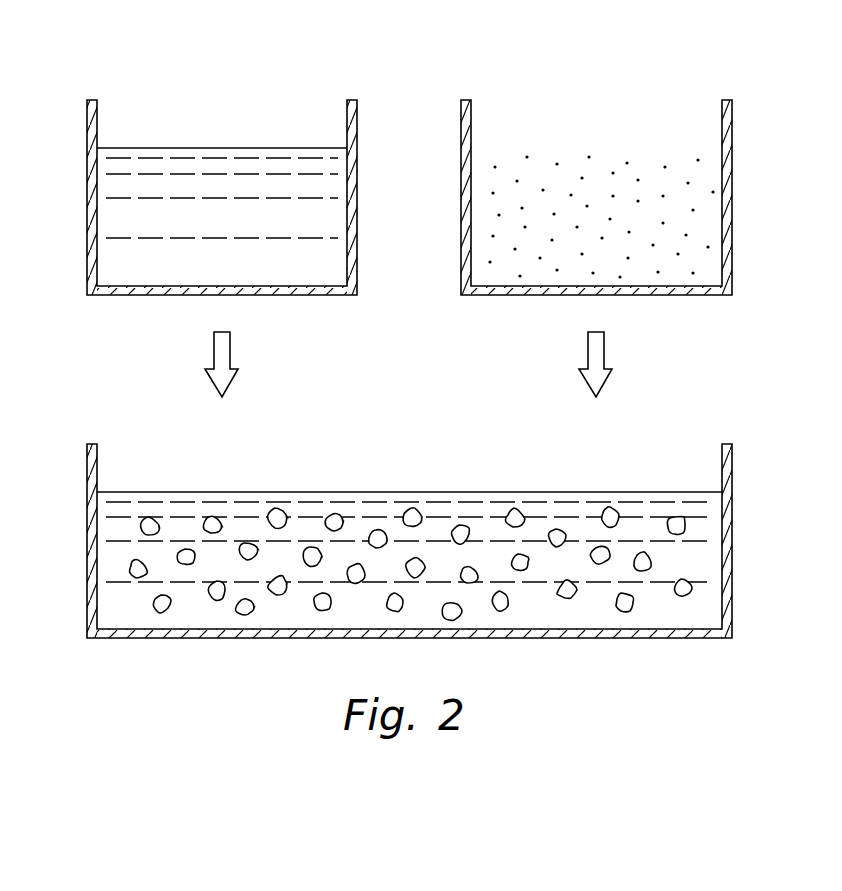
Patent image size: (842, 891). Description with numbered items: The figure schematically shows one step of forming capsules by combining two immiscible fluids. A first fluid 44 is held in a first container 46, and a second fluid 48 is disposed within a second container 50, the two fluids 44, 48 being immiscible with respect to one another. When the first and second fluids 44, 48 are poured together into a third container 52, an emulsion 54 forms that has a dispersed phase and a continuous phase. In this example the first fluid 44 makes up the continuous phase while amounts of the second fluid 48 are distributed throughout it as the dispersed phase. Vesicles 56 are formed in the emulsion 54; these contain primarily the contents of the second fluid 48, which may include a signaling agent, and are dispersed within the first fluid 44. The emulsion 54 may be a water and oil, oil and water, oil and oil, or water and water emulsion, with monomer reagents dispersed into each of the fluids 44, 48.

The first fluid 44 is at (223, 88).
The first container 46 is at (88, 128).
The second fluid 48 is at (597, 88).
The second container 50 is at (732, 126).
The third container 52 is at (732, 469).
The emulsion 54 is at (393, 441).
The vesicles 56 is at (461, 517).